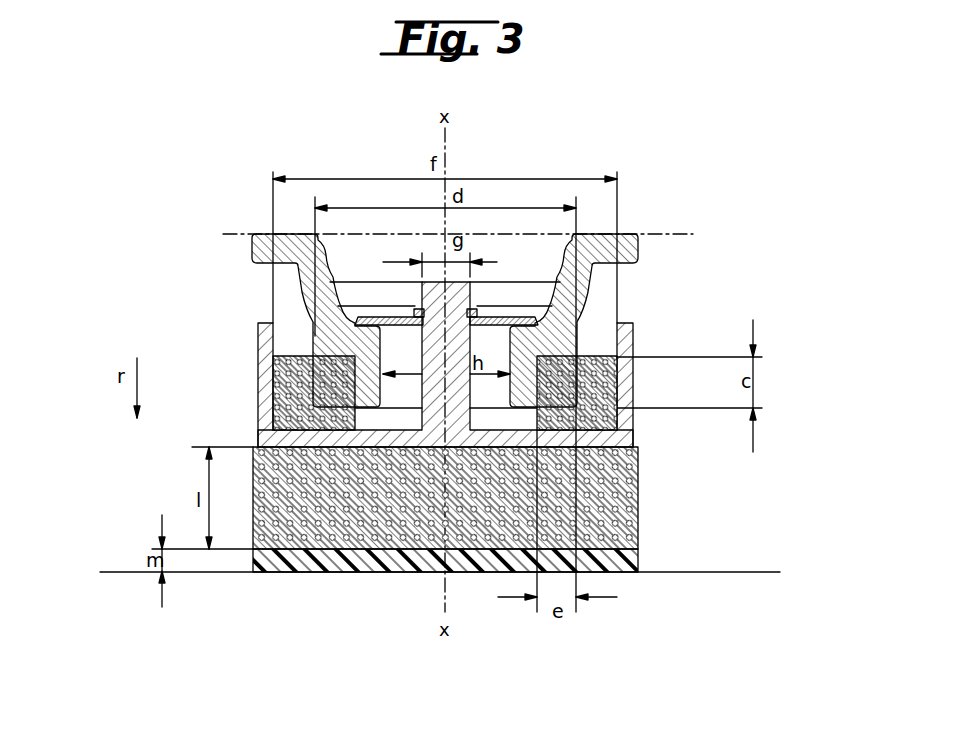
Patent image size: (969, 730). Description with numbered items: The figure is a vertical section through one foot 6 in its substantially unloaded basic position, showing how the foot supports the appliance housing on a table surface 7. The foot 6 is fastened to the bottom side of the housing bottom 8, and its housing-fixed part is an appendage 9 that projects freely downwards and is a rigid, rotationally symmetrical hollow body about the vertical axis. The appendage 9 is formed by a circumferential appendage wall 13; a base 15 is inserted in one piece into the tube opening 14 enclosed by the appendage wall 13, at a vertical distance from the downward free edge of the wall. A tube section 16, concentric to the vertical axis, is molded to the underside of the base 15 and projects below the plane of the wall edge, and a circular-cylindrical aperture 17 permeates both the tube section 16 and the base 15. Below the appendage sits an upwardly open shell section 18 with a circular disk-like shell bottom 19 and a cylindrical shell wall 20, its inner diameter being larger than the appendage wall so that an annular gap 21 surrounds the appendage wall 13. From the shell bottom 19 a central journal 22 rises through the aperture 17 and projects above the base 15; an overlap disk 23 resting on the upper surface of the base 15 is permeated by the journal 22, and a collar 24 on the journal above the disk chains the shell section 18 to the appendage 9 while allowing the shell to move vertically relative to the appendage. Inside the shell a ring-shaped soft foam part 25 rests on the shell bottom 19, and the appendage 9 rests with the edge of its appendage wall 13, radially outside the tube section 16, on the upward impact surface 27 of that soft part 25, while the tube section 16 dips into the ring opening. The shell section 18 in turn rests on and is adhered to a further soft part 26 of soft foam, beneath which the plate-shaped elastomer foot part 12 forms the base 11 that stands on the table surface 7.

The foot 6 is at (730, 228).
The table surface 7 is at (710, 571).
The housing bottom 8 is at (267, 247).
The appendage 9 is at (560, 268).
The base 11 is at (603, 571).
The foot part 12 is at (625, 565).
The appendage wall 13 is at (567, 302).
The tube opening 14 is at (343, 247).
The base 15 is at (345, 336).
The tube section 16 is at (377, 398).
The aperture 17 is at (402, 398).
The shell section 18 is at (655, 333).
The shell bottom 19 is at (602, 438).
The shell wall 20 is at (633, 326).
The annular gap 21 is at (597, 344).
The journal 22 is at (447, 413).
The overlap disk 23 is at (366, 316).
The collar 24 is at (418, 311).
The soft part 25 is at (600, 417).
The soft part 26 is at (438, 520).
The impact surface 27 is at (300, 382).